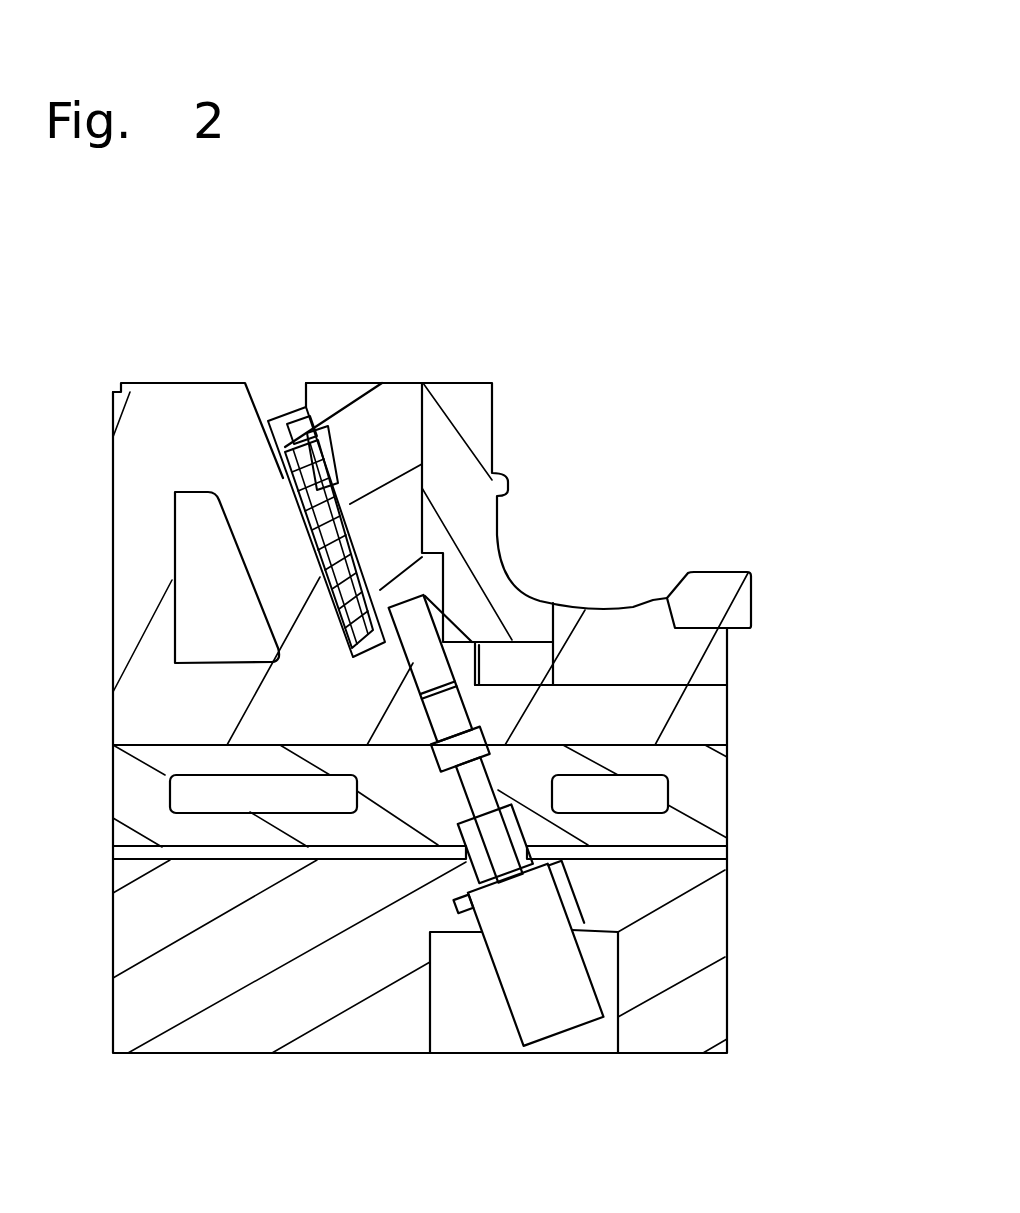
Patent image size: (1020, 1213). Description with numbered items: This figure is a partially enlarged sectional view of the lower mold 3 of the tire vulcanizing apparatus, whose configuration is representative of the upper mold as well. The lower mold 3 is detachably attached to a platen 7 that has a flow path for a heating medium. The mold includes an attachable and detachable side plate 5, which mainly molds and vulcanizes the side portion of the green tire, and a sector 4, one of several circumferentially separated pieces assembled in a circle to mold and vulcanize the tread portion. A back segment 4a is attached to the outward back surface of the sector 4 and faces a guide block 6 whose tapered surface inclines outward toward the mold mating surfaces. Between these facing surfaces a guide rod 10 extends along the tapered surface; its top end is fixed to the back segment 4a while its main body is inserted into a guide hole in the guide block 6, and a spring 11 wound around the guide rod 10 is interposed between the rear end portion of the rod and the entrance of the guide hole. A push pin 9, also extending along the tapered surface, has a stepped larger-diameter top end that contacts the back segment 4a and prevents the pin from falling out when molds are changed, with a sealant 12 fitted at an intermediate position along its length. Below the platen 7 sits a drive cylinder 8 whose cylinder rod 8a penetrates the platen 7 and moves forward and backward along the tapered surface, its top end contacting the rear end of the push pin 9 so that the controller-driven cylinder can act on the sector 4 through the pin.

The lower mold 3 is at (767, 690).
The sector 4 is at (482, 442).
The back segment 4a is at (340, 408).
The side plate 5 is at (638, 628).
The guide block 6 is at (168, 413).
The platen 7 is at (705, 807).
The drive cylinder 8 is at (545, 1015).
The cylinder rod 8a is at (440, 872).
The push pin 9 is at (432, 655).
The guide rod 10 is at (285, 487).
The spring 11 is at (335, 456).
The sealant 12 is at (478, 680).